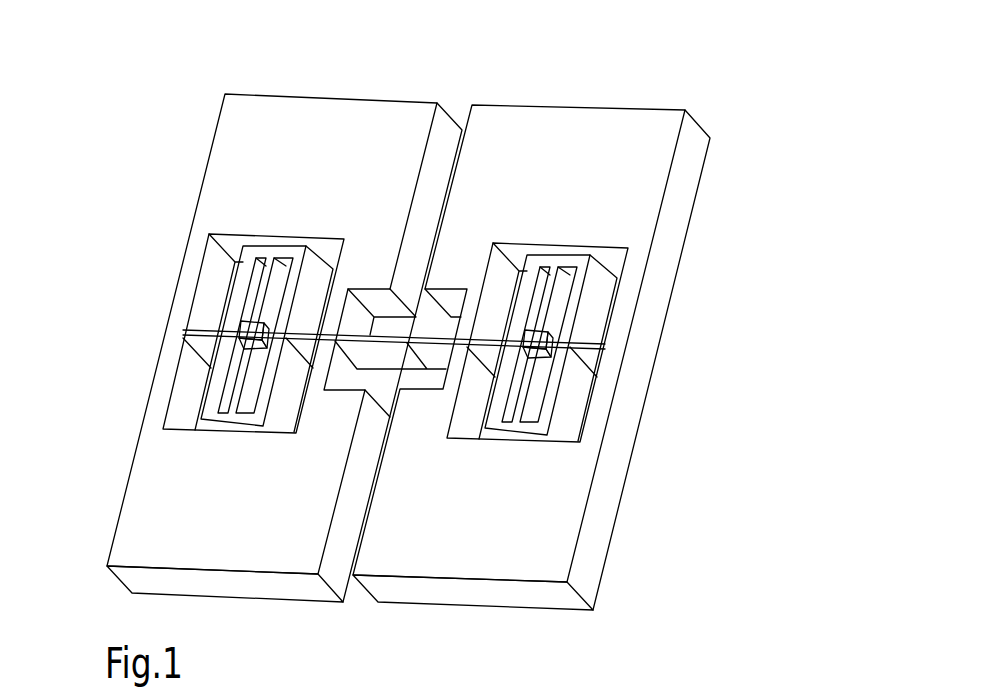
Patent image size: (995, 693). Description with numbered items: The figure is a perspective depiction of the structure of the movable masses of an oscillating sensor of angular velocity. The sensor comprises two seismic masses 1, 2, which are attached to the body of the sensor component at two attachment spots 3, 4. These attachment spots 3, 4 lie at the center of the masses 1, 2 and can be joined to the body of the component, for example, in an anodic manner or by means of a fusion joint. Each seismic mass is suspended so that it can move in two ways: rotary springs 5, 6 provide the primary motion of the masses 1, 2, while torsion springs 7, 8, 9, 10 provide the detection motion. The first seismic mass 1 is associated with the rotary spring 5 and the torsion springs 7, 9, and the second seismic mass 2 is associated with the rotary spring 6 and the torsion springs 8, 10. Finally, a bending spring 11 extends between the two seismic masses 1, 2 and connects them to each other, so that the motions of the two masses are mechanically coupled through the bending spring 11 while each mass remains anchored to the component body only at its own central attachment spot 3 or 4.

The seismic mass 1 is at (335, 100).
The seismic mass 2 is at (612, 112).
The attachment spot 3 is at (259, 322).
The attachment spot 4 is at (545, 328).
The rotary spring 5 is at (238, 396).
The rotary spring 6 is at (522, 390).
The torsion spring 7 is at (203, 330).
The torsion spring 8 is at (603, 333).
The torsion spring 9 is at (300, 332).
The torsion spring 10 is at (478, 334).
The bending spring 11 is at (352, 335).